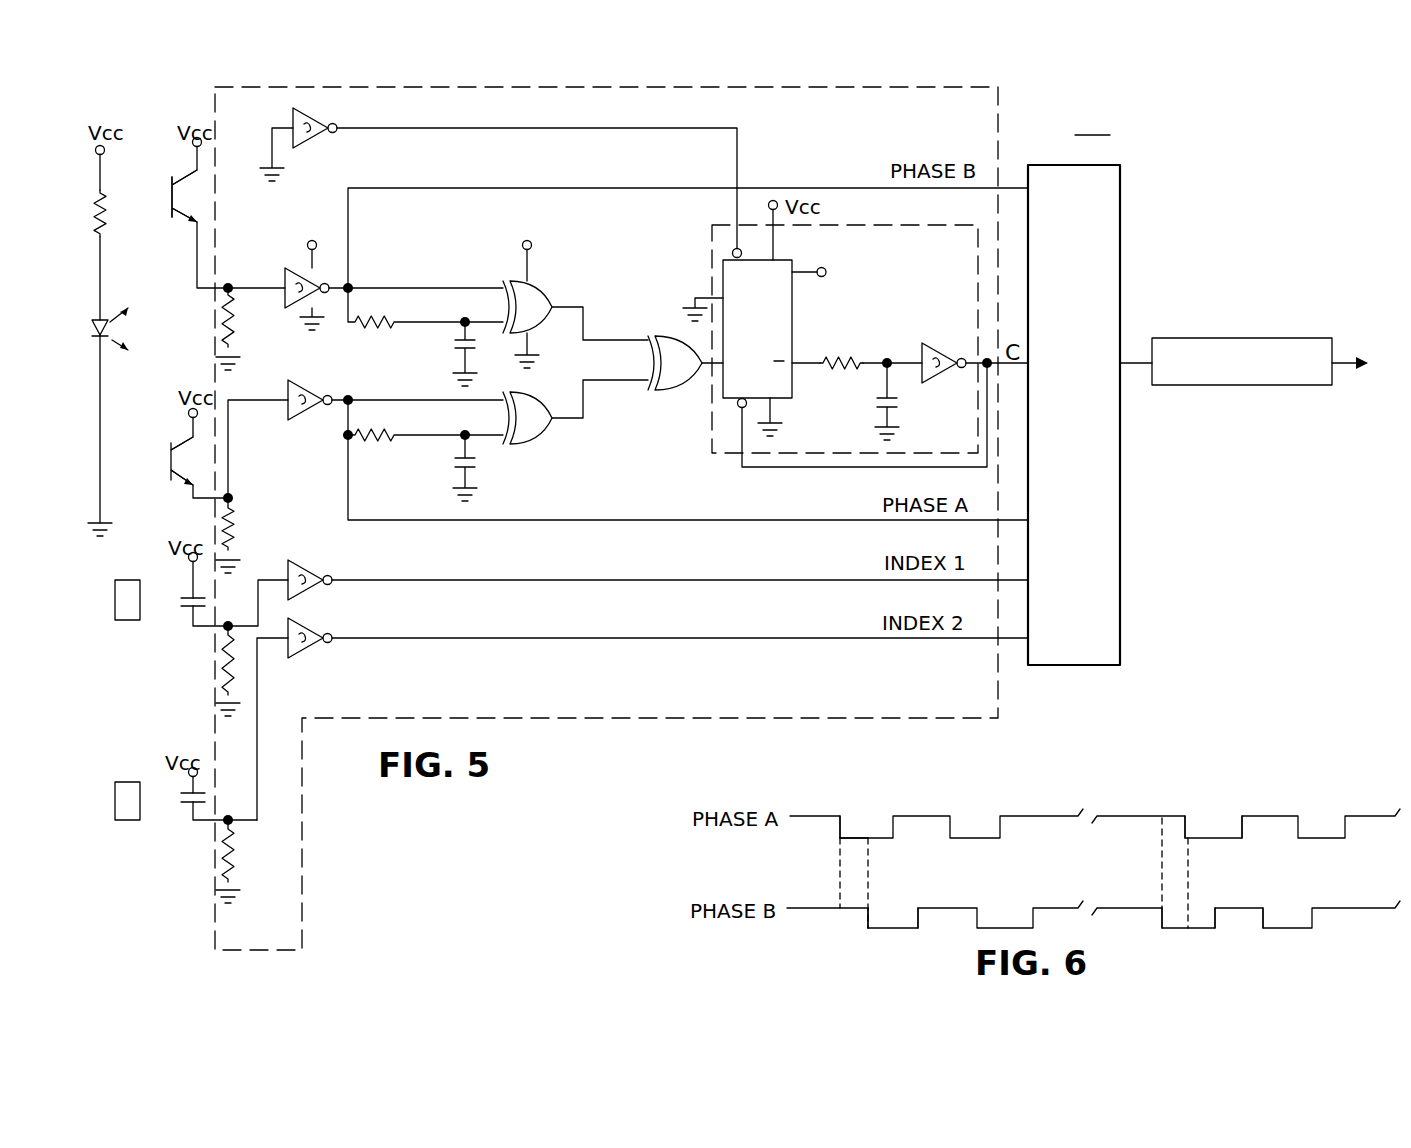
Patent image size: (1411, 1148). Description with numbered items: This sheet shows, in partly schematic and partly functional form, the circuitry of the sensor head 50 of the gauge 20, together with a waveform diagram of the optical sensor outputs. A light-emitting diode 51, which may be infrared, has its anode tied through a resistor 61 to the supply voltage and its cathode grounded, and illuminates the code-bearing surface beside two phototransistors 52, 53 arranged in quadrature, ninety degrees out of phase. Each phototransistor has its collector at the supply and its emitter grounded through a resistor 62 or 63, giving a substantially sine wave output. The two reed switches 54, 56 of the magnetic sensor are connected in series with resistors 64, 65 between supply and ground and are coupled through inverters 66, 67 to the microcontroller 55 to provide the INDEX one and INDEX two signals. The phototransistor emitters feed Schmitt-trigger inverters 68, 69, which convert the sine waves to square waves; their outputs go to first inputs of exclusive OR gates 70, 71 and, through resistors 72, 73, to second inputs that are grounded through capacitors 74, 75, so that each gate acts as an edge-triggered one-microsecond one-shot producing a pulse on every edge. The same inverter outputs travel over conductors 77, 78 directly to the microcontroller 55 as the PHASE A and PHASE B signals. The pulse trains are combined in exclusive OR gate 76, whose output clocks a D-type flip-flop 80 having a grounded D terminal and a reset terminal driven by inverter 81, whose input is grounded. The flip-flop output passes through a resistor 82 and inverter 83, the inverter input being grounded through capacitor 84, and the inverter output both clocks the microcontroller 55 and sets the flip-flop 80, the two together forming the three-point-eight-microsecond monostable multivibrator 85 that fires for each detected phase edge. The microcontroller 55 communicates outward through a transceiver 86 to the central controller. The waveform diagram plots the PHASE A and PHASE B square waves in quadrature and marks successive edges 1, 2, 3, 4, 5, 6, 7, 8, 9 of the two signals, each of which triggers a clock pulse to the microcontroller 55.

In FIG. 5, the gauge 20 is at (998, 151).
In FIG. 5, the sensor head 50 is at (1092, 122).
In FIG. 5, the light-emitting diode 51 is at (121, 319).
In FIG. 5, the phototransistor 52 is at (170, 200).
In FIG. 5, the phototransistor 53 is at (170, 462).
In FIG. 5, the reed switch 54 is at (182, 605).
In FIG. 5, the microcontroller 55 is at (1120, 302).
In FIG. 5, the reed switch 56 is at (190, 806).
In FIG. 5, the resistor 61 is at (108, 232).
In FIG. 5, the resistor 62 is at (232, 333).
In FIG. 5, the resistor 63 is at (234, 528).
In FIG. 5, the resistor 64 is at (216, 675).
In FIG. 5, the resistor 65 is at (234, 869).
In FIG. 5, the inverter 66 is at (318, 562).
In FIG. 5, the inverter 67 is at (318, 620).
In FIG. 5, the inverter 68 is at (289, 268).
In FIG. 5, the inverter 69 is at (306, 420).
In FIG. 5, the exclusive OR gate 70 is at (534, 300).
In FIG. 5, the exclusive OR gate 71 is at (545, 437).
In FIG. 5, the resistor 72 is at (382, 341).
In FIG. 5, the resistor 73 is at (395, 445).
In FIG. 5, the capacitor 74 is at (452, 366).
In FIG. 5, the capacitor 75 is at (483, 480).
In FIG. 5, the exclusive OR gate 76 is at (682, 391).
In FIG. 5, the conductor 77 is at (445, 188).
In FIG. 5, the conductor 78 is at (477, 522).
In FIG. 5, the D-type flip-flop 80 is at (812, 323).
In FIG. 5, the inverter 81 is at (314, 120).
In FIG. 5, the resistor 82 is at (858, 355).
In FIG. 5, the inverter 83 is at (945, 343).
In FIG. 5, the capacitor 84 is at (902, 409).
In FIG. 5, the monostable multivibrator 85 is at (731, 454).
In FIG. 5, the transceiver 86 is at (1262, 340).
In FIG. 6, the phase A falling edge 1 is at (844, 826).
In FIG. 6, the phase B falling edge 2 is at (866, 922).
In FIG. 6, the phase A low pulse 3 is at (858, 814).
In FIG. 6, the phase B rising edge 4 is at (922, 915).
In FIG. 6, the phase B falling edge 5 is at (1162, 915).
In FIG. 6, the phase A falling edge 6 is at (1192, 822).
In FIG. 6, the phase B rising edge 7 is at (1218, 916).
In FIG. 6, the phase A rising edge 8 is at (1240, 822).
In FIG. 6, the phase B falling edge 9 is at (1263, 930).